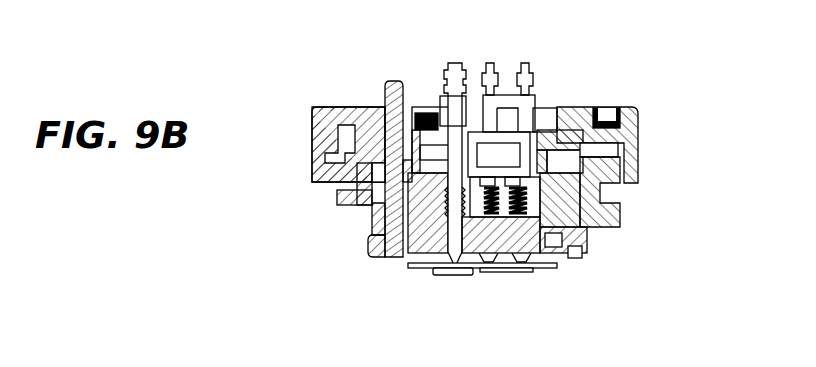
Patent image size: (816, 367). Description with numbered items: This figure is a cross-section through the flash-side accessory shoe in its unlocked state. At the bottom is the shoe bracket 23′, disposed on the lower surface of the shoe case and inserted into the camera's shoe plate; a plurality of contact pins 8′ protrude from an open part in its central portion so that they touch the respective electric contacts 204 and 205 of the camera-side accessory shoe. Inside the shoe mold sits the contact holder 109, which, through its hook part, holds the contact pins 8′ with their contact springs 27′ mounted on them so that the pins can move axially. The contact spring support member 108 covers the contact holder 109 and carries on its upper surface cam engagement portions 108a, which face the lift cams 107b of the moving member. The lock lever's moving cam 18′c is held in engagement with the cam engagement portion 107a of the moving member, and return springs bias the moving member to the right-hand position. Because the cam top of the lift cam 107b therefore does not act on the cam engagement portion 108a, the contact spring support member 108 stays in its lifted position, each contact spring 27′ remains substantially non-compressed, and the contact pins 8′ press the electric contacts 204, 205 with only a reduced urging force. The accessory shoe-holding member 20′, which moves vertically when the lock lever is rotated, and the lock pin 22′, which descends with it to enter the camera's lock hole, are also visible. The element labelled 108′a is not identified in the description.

The contact pins 8′ is at (524, 62).
The lift cam 107b is at (450, 106).
The contact holder 109 is at (498, 157).
The cam engagement portion 107a is at (607, 123).
The moving cam 18′c is at (640, 123).
The accessory shoe-holding member 20′ is at (604, 172).
The contact spring support member 108 is at (545, 133).
The cam engagement portion 108a is at (587, 228).
The lock pin 22′ is at (393, 222).
The shoe bracket 23′ is at (372, 245).
The contact path 108′a is at (462, 92).
The electric contact 204 is at (457, 275).
The electric contact 205 is at (530, 273).
The contact spring 27′ is at (538, 182).